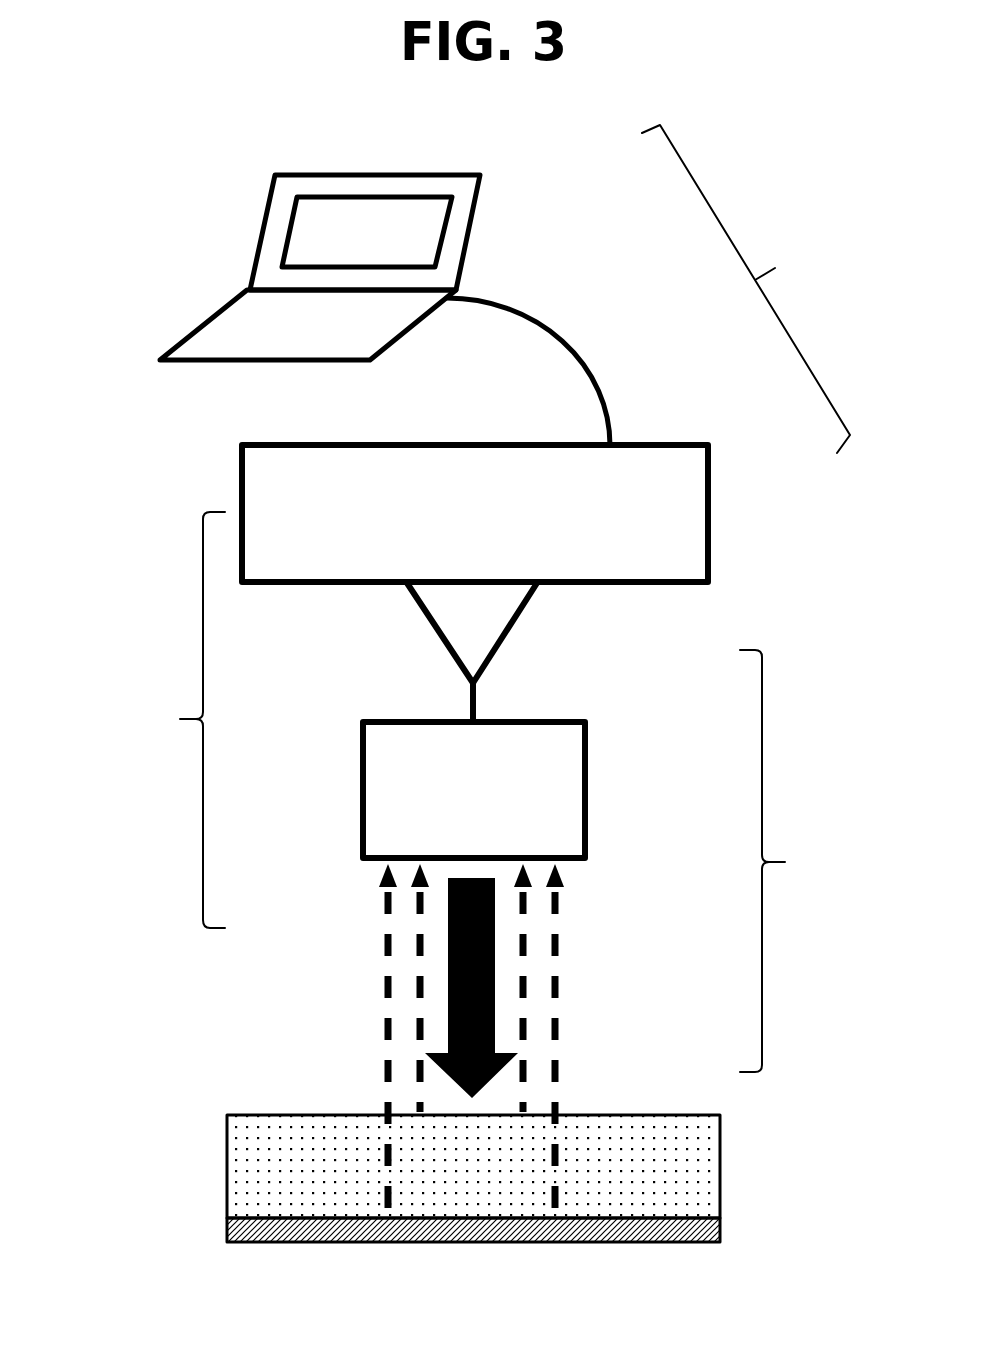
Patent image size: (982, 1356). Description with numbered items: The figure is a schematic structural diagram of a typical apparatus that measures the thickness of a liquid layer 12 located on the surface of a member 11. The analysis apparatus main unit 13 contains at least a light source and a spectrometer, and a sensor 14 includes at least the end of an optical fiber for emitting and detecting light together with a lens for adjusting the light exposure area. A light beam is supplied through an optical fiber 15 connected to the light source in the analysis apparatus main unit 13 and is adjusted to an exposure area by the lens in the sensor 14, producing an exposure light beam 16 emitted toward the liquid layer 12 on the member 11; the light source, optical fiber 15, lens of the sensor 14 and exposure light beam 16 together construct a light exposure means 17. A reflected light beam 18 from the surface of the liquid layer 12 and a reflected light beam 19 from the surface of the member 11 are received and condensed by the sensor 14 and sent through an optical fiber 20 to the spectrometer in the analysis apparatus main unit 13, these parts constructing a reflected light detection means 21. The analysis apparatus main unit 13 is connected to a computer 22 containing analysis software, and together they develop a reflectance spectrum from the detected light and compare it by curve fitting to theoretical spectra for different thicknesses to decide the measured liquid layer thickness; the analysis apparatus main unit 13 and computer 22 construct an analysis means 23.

The member 11 is at (232, 1242).
The liquid layer 12 is at (245, 1143).
The analysis apparatus main unit 13 is at (675, 533).
The sensor 14 is at (387, 787).
The optical fiber 15 is at (425, 615).
The exposure light beam 16 is at (442, 947).
The light exposure means 17 is at (177, 720).
The reflected light beam 18 is at (523, 1030).
The reflected light beam 19 is at (557, 1048).
The optical fiber 20 is at (500, 643).
The reflected light detection means 21 is at (790, 861).
The computer 22 is at (462, 190).
The analysis means 23 is at (746, 289).